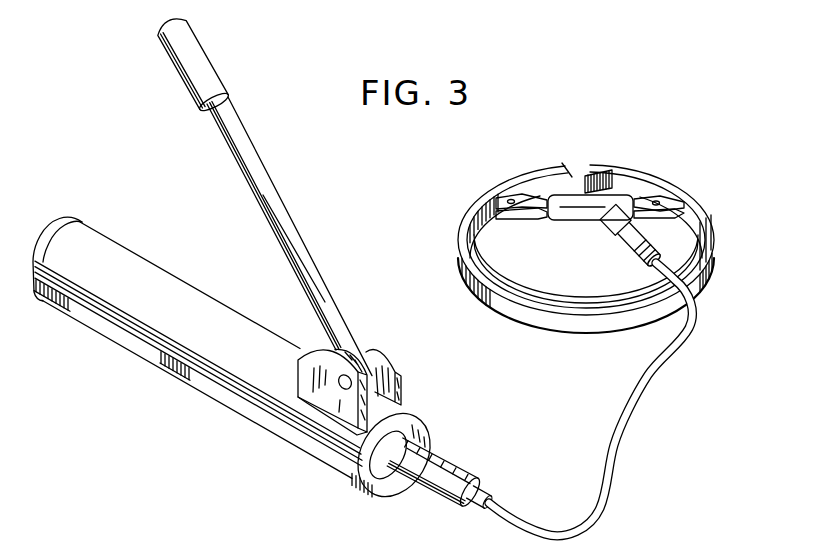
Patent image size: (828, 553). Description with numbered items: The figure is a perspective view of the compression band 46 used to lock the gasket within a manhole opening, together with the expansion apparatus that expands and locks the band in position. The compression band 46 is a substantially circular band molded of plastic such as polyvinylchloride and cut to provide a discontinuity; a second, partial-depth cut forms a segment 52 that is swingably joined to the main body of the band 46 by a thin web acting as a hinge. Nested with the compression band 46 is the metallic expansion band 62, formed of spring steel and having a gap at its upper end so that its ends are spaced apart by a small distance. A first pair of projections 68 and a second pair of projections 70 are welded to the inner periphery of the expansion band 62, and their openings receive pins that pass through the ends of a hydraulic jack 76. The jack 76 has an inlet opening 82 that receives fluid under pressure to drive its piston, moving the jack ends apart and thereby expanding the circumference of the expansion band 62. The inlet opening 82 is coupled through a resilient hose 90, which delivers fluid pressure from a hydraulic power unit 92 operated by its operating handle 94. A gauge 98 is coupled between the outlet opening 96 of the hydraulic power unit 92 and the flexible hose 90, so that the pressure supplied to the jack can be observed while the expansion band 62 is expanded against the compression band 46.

The compression band 46 is at (547, 317).
The segment 52 is at (592, 177).
The expansion band 62 is at (632, 293).
The first pair of projections 68 is at (664, 194).
The second pair of projections 70 is at (509, 198).
The hydraulic jack 76 is at (558, 230).
The inlet opening 82 is at (607, 227).
The resilient hose 90 is at (648, 367).
The hydraulic power unit 92 is at (157, 453).
The operating handle 94 is at (210, 72).
The outlet opening 96 is at (362, 478).
The gauge 98 is at (437, 458).